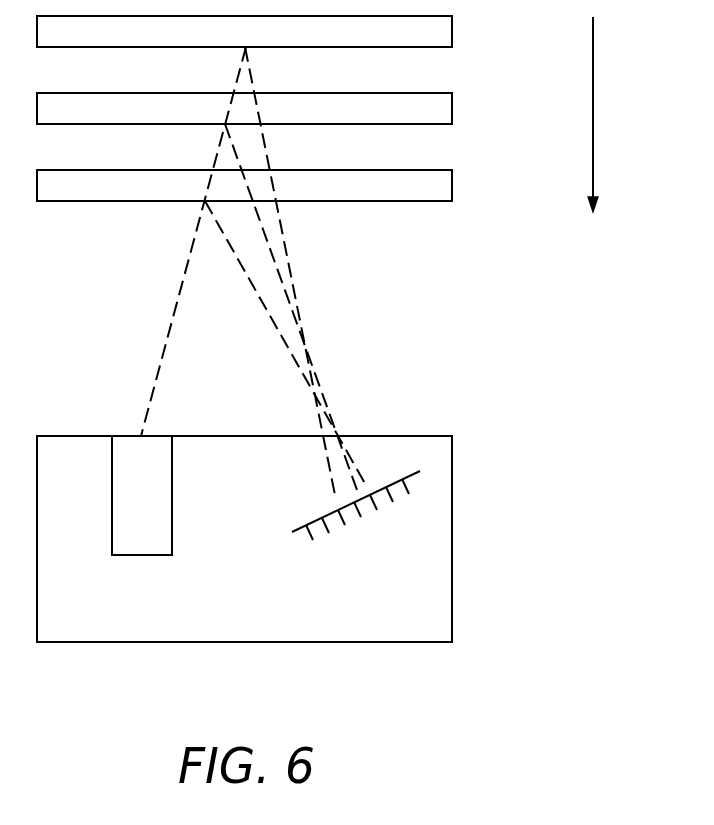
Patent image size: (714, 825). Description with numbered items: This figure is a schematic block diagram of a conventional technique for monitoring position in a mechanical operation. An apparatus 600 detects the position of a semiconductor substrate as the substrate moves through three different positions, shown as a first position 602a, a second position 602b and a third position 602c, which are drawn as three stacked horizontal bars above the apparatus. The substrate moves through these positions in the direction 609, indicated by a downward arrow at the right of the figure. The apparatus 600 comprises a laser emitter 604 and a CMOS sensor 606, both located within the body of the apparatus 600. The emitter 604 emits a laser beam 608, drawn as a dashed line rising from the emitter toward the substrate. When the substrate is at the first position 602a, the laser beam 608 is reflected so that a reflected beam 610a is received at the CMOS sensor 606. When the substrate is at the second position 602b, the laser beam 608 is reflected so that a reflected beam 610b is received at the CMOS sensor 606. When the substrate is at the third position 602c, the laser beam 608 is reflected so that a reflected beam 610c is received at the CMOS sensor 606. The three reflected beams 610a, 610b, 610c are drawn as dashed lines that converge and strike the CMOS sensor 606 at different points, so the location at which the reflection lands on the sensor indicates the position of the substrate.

The apparatus 600 is at (245, 642).
The first position of semiconductor substrate 602a is at (452, 33).
The second position of semiconductor substrate 602b is at (452, 110).
The third position of semiconductor substrate 602c is at (452, 187).
The laser emitter 604 is at (140, 555).
The CMOS sensor 606 is at (367, 522).
The laser beam 608 is at (175, 307).
The direction 609 is at (593, 107).
The reflected beam 610a is at (282, 222).
The reflected beam 610b is at (271, 253).
The reflected beam 610c is at (256, 288).